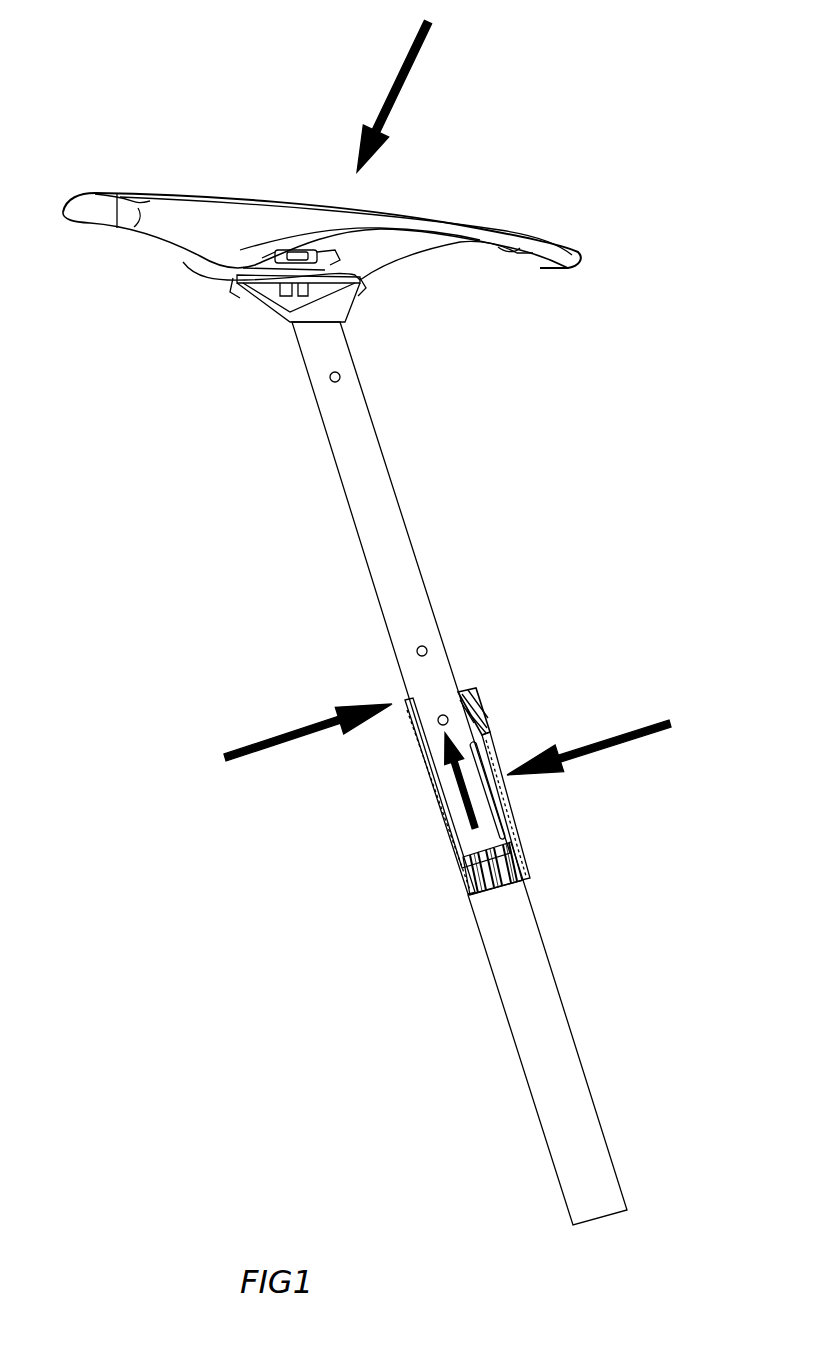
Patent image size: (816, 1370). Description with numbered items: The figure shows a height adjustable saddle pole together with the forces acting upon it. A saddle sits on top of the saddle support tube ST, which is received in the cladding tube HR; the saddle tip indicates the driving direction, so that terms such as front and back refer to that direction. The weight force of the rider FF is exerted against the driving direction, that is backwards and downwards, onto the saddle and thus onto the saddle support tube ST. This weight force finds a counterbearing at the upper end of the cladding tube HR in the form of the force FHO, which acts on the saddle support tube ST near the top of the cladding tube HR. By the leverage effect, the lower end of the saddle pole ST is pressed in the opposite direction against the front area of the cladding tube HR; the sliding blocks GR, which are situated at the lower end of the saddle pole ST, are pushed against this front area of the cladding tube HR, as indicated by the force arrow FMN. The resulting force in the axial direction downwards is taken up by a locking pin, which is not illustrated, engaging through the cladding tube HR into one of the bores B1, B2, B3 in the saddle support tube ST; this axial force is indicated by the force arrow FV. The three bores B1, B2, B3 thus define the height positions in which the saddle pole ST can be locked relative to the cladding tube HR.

The weight force of the rider FF is at (395, 68).
The bore B1 is at (340, 377).
The saddle support tube ST is at (413, 543).
The bore B2 is at (427, 649).
The bore B3 is at (447, 716).
The counterbearing force at upper end of cladding tube FHO is at (255, 738).
The force arrow at sliding blocks FMN is at (645, 720).
The axial force arrow FV is at (462, 796).
The sliding blocks GR is at (500, 813).
The cladding tube HR is at (553, 967).